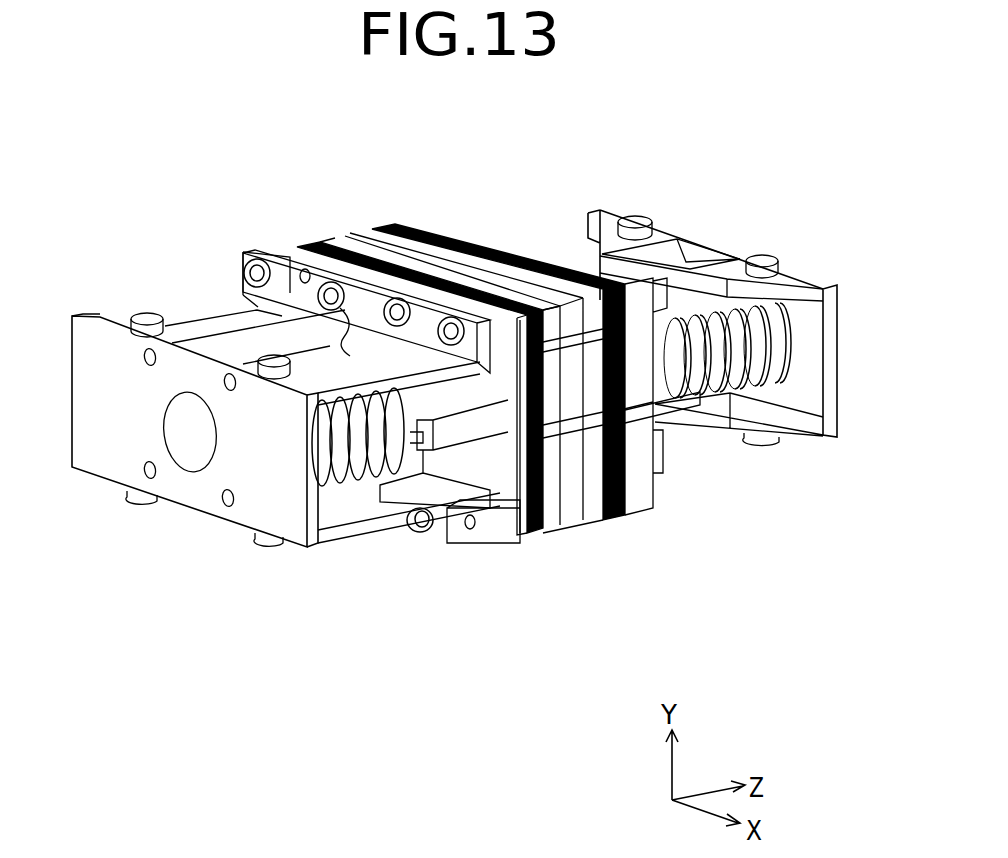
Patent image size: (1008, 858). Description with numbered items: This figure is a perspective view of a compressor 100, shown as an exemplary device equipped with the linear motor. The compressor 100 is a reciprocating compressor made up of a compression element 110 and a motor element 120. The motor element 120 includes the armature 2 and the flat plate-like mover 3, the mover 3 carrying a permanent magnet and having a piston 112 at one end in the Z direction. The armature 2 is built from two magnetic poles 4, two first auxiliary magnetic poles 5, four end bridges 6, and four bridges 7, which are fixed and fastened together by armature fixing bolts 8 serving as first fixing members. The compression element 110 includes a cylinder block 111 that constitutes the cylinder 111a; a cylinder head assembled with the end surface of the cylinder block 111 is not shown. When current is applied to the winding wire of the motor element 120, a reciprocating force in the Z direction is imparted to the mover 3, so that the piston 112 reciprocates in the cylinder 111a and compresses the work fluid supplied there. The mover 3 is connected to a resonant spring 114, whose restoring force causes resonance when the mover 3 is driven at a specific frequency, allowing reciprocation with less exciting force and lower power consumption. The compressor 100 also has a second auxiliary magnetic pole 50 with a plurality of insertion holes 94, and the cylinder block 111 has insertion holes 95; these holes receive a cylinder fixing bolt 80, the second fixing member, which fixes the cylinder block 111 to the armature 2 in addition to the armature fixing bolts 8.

The armature 2 is at (682, 568).
The mover 3 is at (673, 393).
The magnetic pole 4 is at (615, 515).
The first auxiliary magnetic pole 5 is at (572, 520).
The end bridge 6 is at (652, 505).
The bridge 7 is at (583, 513).
The armature fixing bolt 8 is at (310, 258).
The second auxiliary magnetic pole 50 is at (352, 255).
The cylinder fixing bolt 80 is at (247, 273).
The insertion hole 94 is at (290, 262).
The insertion hole 95 is at (250, 262).
The compressor 100 is at (791, 687).
The compression element 110 is at (437, 587).
The cylinder block 111 is at (275, 508).
The cylinder 111a is at (187, 452).
The piston 112 is at (200, 405).
The resonant spring 114 is at (373, 443).
The motor element 120 is at (698, 622).